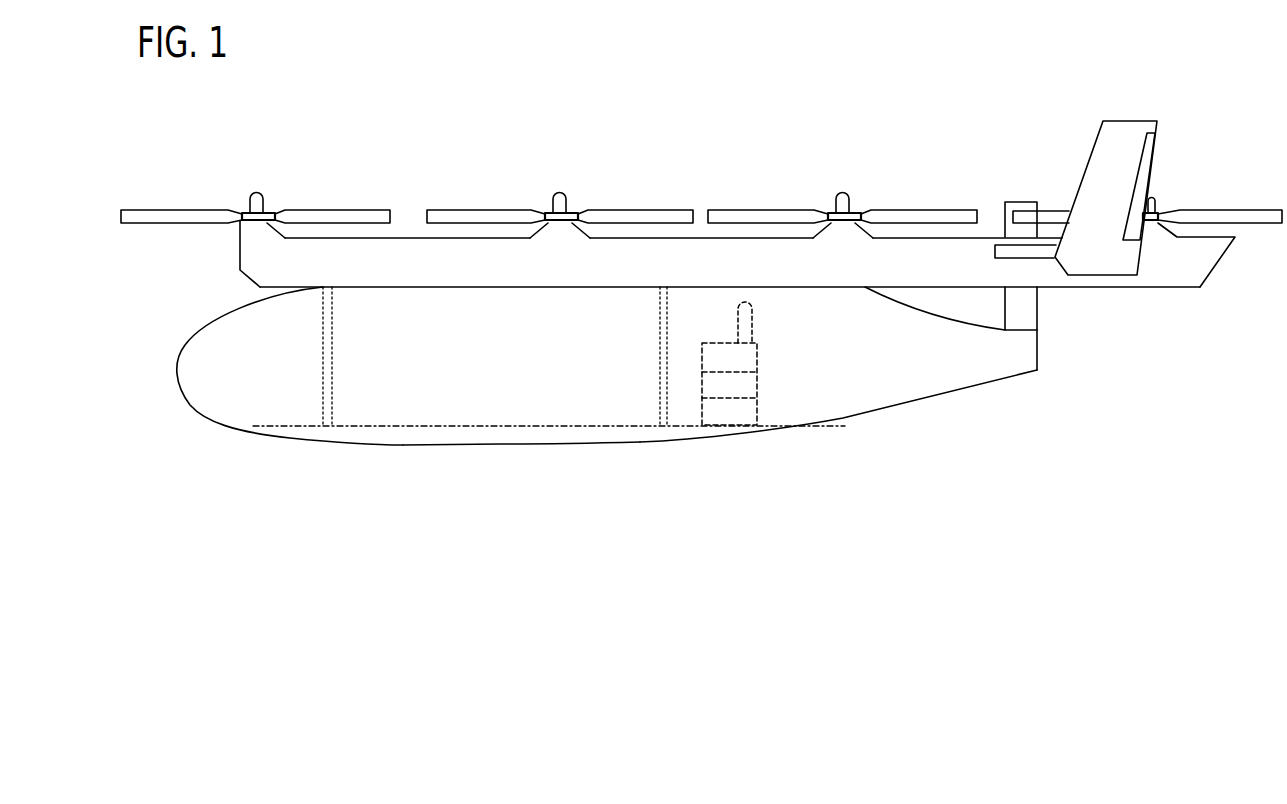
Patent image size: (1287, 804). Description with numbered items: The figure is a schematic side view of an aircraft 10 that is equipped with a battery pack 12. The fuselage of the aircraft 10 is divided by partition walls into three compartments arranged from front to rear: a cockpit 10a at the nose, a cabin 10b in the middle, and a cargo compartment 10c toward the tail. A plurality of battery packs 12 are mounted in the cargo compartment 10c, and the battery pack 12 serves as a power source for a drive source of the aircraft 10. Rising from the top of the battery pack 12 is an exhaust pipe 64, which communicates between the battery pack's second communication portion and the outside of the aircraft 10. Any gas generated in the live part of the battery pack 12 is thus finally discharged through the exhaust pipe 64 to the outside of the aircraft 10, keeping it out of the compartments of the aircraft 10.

The aircraft 10 is at (547, 113).
The cockpit 10a is at (262, 408).
The cabin 10b is at (487, 408).
The cargo compartment 10c is at (843, 400).
The battery pack 12 is at (764, 385).
The exhaust pipe 64 is at (753, 323).